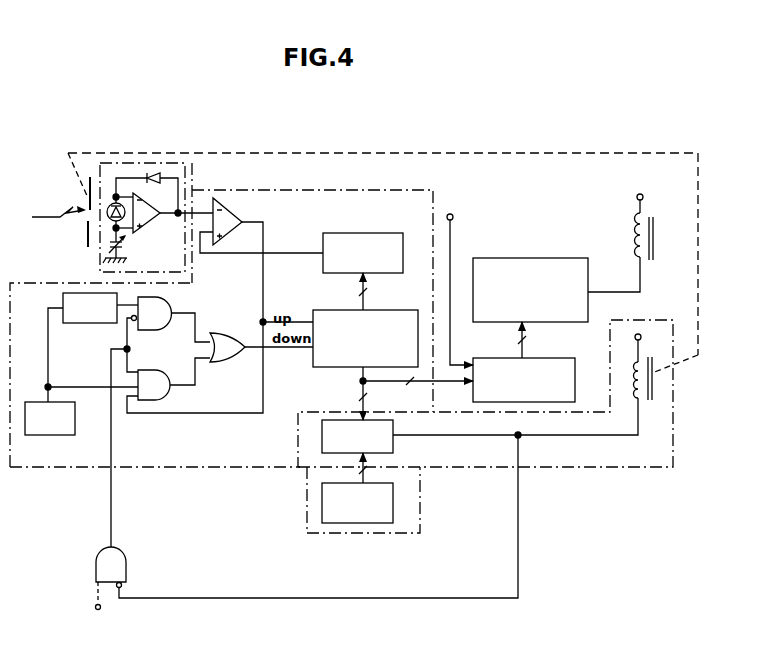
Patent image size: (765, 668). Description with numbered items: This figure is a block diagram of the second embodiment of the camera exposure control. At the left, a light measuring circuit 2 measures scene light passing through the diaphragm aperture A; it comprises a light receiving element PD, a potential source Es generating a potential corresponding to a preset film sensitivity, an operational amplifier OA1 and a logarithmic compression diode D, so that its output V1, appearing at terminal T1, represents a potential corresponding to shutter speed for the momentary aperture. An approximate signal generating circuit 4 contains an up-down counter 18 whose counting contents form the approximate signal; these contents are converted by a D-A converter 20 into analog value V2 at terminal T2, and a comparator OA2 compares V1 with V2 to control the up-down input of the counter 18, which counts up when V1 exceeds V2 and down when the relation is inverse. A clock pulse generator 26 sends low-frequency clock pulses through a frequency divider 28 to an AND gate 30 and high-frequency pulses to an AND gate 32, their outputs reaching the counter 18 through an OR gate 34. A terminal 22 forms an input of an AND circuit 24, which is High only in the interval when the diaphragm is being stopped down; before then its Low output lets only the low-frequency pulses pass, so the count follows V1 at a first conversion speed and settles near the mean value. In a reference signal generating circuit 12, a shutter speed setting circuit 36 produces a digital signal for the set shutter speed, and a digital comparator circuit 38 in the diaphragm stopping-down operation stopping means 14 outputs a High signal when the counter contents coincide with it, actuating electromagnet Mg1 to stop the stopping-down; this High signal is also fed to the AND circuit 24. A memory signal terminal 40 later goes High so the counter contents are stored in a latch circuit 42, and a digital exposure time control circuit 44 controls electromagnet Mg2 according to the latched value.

The light measuring circuit 2 is at (148, 198).
The approximate signal generating circuit 4 is at (45, 467).
The reference signal generating circuit 12 is at (397, 533).
The diaphragm stopping-down operation stopping means 14 is at (558, 467).
The up-down counter 18 is at (322, 369).
The D-A converter 20 is at (331, 273).
The terminal 22 is at (104, 617).
The AND circuit 24 is at (97, 554).
The clock pulse generator 26 is at (75, 420).
The frequency divider 28 is at (76, 323).
The AND gate 30 is at (170, 322).
The AND gate 32 is at (150, 402).
The OR gate 34 is at (228, 360).
The shutter speed setting circuit 36 is at (322, 520).
The digital comparator circuit 38 is at (322, 438).
The memory signal terminal 40 is at (455, 276).
The latch circuit 42 is at (533, 358).
The digital exposure time control circuit 44 is at (547, 258).
The diaphragm aperture A is at (88, 196).
The logarithmic compression diode D is at (156, 175).
The operational amplifier OA1 is at (160, 215).
The comparator OA2 is at (222, 219).
The terminal T1 is at (206, 211).
The terminal T2 is at (261, 261).
The light receiving element PD is at (108, 222).
The potential source Es is at (126, 250).
The electromagnet Mg1 is at (653, 383).
The electromagnet Mg2 is at (653, 224).